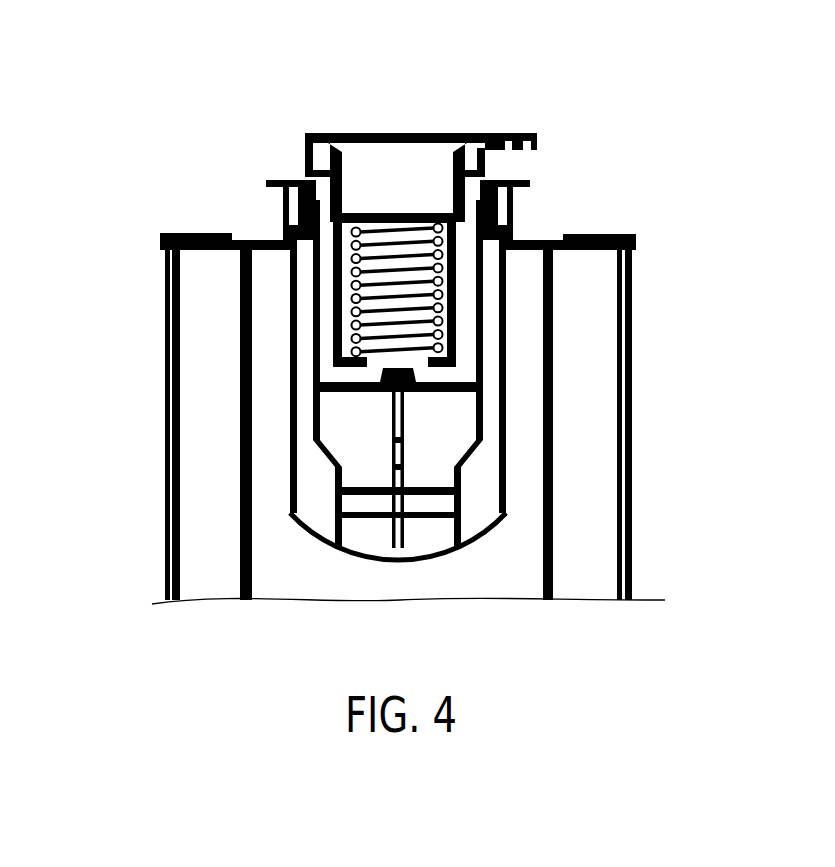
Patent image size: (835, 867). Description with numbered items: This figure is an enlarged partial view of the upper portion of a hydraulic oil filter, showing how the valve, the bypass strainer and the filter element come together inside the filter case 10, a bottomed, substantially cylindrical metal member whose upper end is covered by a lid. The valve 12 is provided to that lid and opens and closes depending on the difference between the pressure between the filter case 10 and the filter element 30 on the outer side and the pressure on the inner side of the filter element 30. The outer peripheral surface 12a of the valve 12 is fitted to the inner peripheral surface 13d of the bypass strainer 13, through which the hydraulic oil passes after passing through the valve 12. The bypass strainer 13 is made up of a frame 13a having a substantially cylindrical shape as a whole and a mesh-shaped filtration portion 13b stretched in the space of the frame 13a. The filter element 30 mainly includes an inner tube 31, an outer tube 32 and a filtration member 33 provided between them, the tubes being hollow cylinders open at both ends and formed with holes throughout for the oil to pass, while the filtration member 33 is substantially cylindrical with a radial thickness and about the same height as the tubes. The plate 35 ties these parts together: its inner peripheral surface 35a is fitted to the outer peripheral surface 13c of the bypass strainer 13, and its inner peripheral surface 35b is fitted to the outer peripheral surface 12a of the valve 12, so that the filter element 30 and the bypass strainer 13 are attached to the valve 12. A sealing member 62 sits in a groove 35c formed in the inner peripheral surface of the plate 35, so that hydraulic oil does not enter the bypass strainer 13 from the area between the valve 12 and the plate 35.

The filter case 10 is at (718, 46).
The valve 12 is at (482, 150).
The outer peripheral surface of the valve 12a is at (300, 181).
The sealing member 62 is at (220, 174).
The bypass strainer 13 is at (72, 315).
The frame 13a is at (280, 475).
The filtration portion 13b is at (241, 470).
The outer peripheral surface of the bypass strainer 13c is at (280, 320).
The inner peripheral surface of the bypass strainer 13d is at (292, 396).
The filter element 30 is at (717, 140).
The inner tube 31 is at (474, 425).
The outer tube 32 is at (438, 425).
The filtration member 33 is at (436, 425).
The plate 35 is at (482, 255).
The inner peripheral surface of the plate 35a is at (528, 255).
The inner peripheral surface of the plate 35b is at (596, 167).
The groove 35c is at (609, 213).